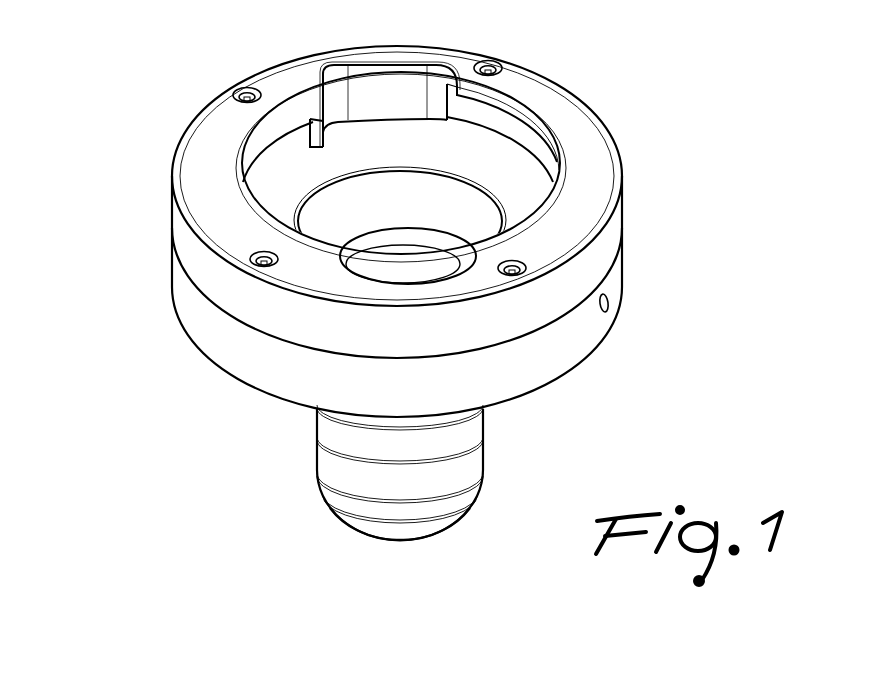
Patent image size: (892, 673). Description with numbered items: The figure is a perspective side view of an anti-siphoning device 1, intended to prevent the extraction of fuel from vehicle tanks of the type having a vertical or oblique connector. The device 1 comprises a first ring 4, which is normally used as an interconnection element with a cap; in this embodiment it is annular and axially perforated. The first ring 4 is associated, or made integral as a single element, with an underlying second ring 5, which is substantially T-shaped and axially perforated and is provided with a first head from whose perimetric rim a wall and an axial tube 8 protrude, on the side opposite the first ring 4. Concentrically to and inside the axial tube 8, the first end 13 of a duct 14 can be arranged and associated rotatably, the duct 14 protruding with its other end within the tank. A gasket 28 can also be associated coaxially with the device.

The anti-siphoning device 1 is at (136, 131).
The first ring 4 is at (609, 116).
The second ring 5 is at (630, 269).
The axial tube 8 is at (393, 198).
The first end 13 is at (419, 242).
The duct 14 is at (305, 474).
The gasket 28 is at (433, 528).